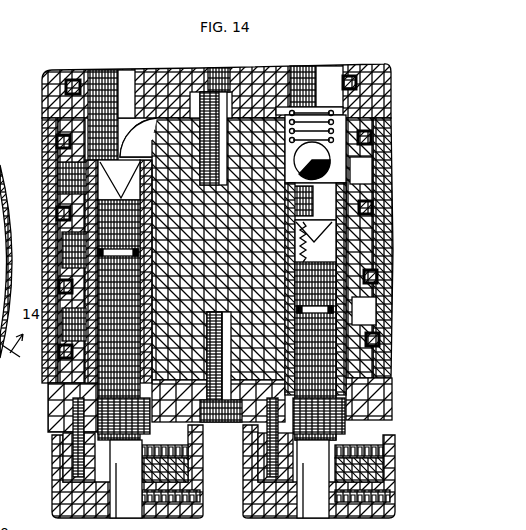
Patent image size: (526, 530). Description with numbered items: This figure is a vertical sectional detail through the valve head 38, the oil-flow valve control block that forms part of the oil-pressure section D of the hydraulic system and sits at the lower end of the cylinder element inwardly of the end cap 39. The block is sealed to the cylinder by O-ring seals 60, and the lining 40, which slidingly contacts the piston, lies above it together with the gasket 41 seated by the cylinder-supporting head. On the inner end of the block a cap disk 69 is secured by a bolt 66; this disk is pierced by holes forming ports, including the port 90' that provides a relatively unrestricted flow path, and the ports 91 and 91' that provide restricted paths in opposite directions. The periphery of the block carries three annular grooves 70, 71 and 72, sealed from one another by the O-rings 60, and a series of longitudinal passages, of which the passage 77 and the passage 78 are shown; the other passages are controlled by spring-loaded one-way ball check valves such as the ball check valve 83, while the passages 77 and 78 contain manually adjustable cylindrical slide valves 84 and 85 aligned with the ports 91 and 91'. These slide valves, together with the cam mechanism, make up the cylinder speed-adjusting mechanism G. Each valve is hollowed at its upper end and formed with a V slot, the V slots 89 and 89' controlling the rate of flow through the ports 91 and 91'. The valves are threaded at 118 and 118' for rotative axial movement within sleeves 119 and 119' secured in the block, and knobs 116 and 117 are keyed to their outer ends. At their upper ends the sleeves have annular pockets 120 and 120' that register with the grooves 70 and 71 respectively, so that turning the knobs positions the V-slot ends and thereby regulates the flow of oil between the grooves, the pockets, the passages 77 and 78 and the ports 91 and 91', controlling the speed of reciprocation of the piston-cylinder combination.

The lining 40 is at (59, 70).
The gasket 41 is at (74, 84).
The port 91 is at (124, 95).
The bolt 66 is at (233, 80).
The cap disk 69 is at (277, 75).
The port 91' is at (309, 71).
The O-ring seal 60 is at (377, 279).
The annular groove 70 is at (58, 178).
The annular groove 71 is at (60, 260).
The annular groove 72 is at (50, 347).
The end cap 39 is at (63, 391).
The threaded portion 118 is at (55, 407).
The threaded portion 118' is at (387, 396).
The knob 116 is at (53, 500).
The knob 117 is at (393, 502).
The V slot 89 is at (151, 137).
The V slot 89' is at (287, 211).
The longitudinal port 77 is at (205, 198).
The annular pocket 120 is at (165, 271).
The annular pocket 120' is at (258, 289).
The slide valve 84 is at (150, 258).
The slide valve 85 is at (285, 277).
The ball check valve 83 is at (290, 146).
The longitudinal port 78 is at (297, 195).
The sleeve 119 is at (218, 354).
The sleeve 119' is at (291, 289).
The valve head 38 is at (229, 304).
The oil-pressure section D is at (217, 222).
The cylinder speed-adjusting mechanism G is at (222, 505).
The port 90' is at (164, 525).